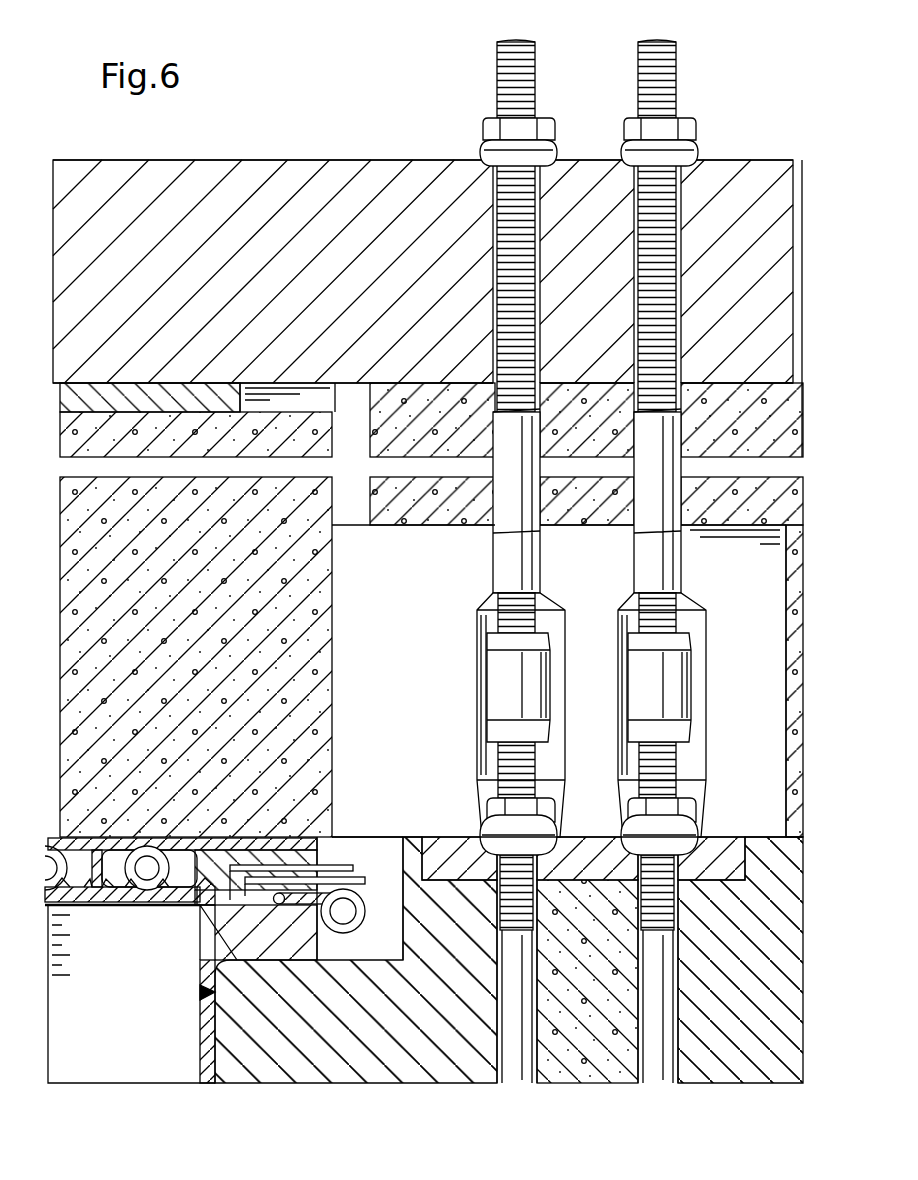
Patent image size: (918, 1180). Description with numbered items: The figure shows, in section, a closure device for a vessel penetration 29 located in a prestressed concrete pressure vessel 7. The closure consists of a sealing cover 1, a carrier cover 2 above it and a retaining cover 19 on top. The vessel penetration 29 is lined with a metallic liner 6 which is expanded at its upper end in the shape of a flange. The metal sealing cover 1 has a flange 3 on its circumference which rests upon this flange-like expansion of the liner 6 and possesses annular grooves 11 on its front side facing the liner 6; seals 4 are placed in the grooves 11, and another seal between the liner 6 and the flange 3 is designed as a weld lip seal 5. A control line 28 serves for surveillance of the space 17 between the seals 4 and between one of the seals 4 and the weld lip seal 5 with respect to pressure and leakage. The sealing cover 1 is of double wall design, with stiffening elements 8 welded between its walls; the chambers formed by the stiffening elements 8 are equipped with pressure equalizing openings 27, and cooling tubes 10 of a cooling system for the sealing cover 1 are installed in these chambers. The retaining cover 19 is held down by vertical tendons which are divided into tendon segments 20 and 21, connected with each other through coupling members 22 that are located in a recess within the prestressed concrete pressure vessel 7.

The sealing cover 1 is at (60, 893).
The carrier cover 2 is at (322, 578).
The flange 3 is at (305, 850).
The seals 4 is at (200, 890).
The weld lip seal 5 is at (355, 915).
The metallic liner 6 is at (205, 1053).
The prestressed concrete pressure vessel 7 is at (300, 1062).
The stiffening elements 8 is at (97, 887).
The cooling tubes 10 is at (147, 870).
The annular grooves 11 is at (213, 952).
The space 17 is at (203, 985).
The retaining cover 19 is at (585, 178).
The tendon segment 20 is at (505, 197).
The tendon segment 21 is at (517, 1062).
The coupling members 22 is at (497, 678).
The pressure equalizing openings 27 is at (122, 887).
The control line 28 is at (350, 866).
The vessel penetration 29 is at (75, 1060).